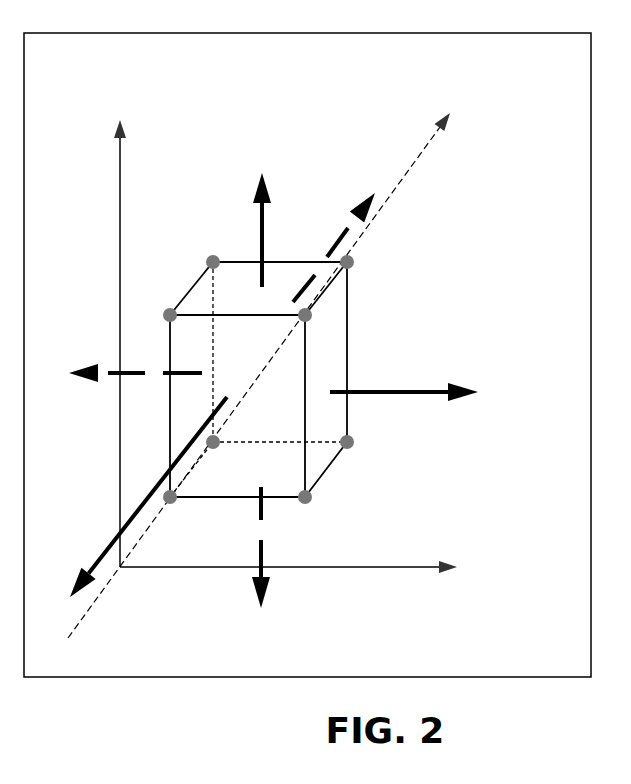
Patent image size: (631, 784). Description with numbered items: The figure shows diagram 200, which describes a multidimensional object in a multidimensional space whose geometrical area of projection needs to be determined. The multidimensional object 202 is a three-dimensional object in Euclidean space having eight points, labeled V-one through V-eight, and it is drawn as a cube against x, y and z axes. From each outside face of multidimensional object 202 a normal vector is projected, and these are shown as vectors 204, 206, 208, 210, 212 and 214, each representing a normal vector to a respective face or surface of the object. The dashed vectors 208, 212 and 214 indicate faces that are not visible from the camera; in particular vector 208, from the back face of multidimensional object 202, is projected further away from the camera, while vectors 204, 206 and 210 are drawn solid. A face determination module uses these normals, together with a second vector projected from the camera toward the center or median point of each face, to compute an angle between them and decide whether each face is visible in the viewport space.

The diagram 200 is at (307, 390).
The multidimensional object 202 is at (266, 384).
The vector 204 is at (148, 497).
The vector 206 is at (404, 381).
The vector 208 is at (334, 247).
The vector 210 is at (248, 229).
The vector 212 is at (135, 360).
The vector 214 is at (272, 547).